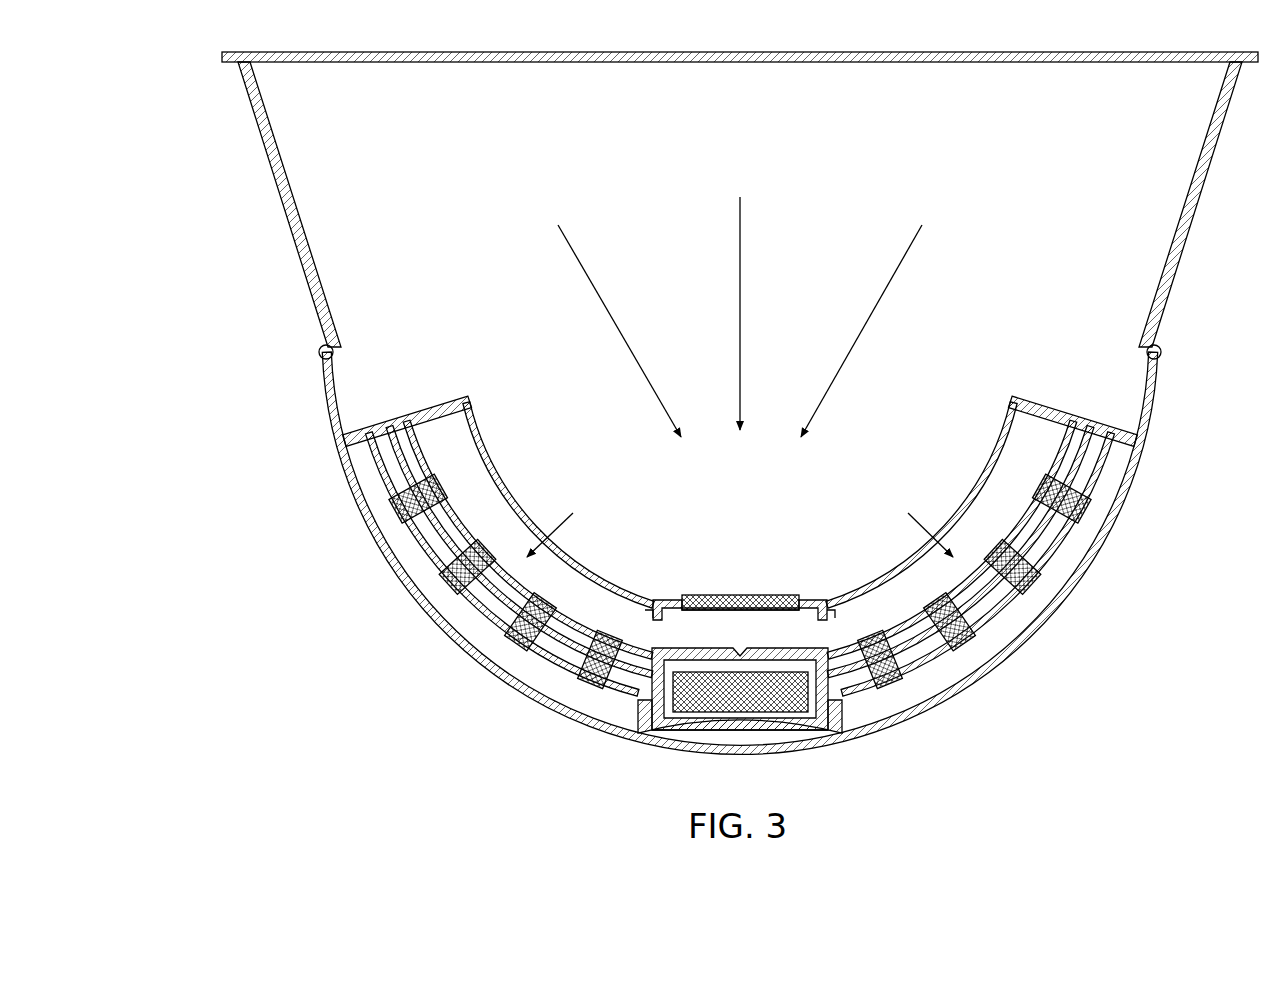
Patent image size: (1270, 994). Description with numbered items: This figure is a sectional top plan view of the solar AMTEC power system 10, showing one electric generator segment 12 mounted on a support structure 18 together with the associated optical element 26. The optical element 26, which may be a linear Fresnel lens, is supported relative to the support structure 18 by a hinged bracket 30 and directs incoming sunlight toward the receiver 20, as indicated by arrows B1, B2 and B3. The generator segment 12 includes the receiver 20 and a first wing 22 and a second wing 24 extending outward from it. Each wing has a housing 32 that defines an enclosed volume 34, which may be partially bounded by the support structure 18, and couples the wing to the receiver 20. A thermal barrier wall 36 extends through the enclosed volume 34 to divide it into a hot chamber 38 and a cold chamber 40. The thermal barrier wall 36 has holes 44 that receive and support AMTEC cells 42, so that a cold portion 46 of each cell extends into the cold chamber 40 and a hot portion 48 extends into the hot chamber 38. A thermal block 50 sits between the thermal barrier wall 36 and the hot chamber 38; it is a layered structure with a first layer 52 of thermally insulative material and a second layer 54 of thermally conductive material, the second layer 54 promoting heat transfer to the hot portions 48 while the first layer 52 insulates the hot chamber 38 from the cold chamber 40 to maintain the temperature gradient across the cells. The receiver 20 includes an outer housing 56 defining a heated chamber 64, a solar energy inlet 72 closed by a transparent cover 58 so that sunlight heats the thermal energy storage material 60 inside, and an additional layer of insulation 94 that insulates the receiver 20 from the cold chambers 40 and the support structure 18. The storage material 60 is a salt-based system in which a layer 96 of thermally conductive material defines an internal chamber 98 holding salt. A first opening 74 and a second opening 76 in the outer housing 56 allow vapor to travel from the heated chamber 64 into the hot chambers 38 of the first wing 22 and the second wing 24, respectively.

The solar AMTEC power system 10 is at (210, 135).
The optical element 26 is at (800, 63).
The hinged bracket 30 is at (292, 176).
The support structure 18 is at (1160, 400).
The cold chamber 40 is at (462, 622).
The arrow of incoming sunlight B1 is at (624, 318).
The arrow of incoming sunlight B2 is at (742, 270).
The arrow of incoming sunlight B3 is at (870, 322).
The first wing 22 is at (475, 402).
The electric generator segment 12 is at (1087, 413).
The second wing 24 is at (1012, 400).
The housing 32 is at (484, 424).
The first layer 52 is at (395, 432).
The second layer 54 is at (412, 428).
The thermal block 50 is at (431, 437).
The AMTEC cell 42 is at (473, 468).
The thermal barrier wall 36 is at (425, 547).
The cold portion 46 is at (428, 572).
The hole 44 is at (405, 505).
The hot chamber 38 is at (739, 507).
The hot portion 48 is at (535, 530).
The enclosed volume 34 is at (740, 524).
The outer housing 56 is at (660, 598).
The transparent cover 58 is at (745, 594).
The solar energy inlet 72 is at (700, 596).
The first opening 74 is at (645, 610).
The second opening 76 is at (828, 620).
The receiver 20 is at (812, 598).
The additional layer of insulation 94 is at (842, 720).
The thermal energy storage material 60 is at (712, 648).
The internal chamber 98 is at (745, 712).
The layer of thermally conductive material 96 is at (692, 722).
The heated chamber 64 is at (743, 635).